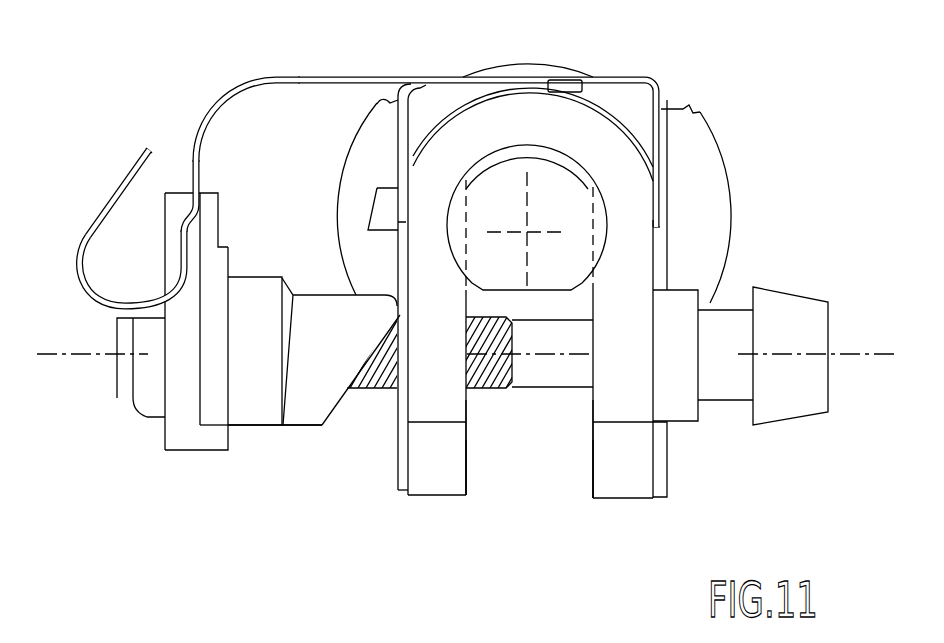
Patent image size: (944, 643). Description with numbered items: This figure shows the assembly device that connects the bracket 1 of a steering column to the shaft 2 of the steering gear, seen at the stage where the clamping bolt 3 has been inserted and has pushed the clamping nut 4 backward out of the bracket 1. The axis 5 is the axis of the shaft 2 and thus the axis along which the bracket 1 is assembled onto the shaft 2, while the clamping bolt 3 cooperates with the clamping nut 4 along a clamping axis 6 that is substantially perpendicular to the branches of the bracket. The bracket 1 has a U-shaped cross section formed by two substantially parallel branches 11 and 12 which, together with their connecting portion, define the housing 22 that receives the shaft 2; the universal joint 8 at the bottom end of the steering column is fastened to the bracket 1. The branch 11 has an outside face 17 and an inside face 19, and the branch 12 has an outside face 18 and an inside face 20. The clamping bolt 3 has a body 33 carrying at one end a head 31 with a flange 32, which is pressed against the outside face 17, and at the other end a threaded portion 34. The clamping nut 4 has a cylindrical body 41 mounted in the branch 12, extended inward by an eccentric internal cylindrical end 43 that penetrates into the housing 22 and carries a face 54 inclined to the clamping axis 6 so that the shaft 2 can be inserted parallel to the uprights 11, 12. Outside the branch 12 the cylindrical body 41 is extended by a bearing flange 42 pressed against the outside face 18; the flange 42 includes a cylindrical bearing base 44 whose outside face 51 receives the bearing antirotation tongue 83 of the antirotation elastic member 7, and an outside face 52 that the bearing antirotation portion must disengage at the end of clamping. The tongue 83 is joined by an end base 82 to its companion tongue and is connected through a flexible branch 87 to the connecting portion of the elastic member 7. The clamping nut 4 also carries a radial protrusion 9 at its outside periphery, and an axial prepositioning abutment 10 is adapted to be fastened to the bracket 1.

The bracket 1 is at (500, 128).
The shaft 2 is at (578, 206).
The clamping bolt 3 is at (737, 306).
The clamping nut 4 is at (268, 430).
The axis 5 is at (530, 230).
The clamping axis 6 is at (67, 360).
The antirotation elastic member 7 is at (371, 75).
The universal joint 8 is at (700, 117).
The radial protrusion 9 is at (213, 217).
The axial prepositioning abutment 10 is at (383, 210).
The branch 11 is at (617, 482).
The branch 12 is at (433, 472).
The outside face 17 is at (660, 482).
The outside face 18 is at (407, 463).
The inside face 19 is at (593, 472).
The inside face 20 is at (472, 472).
The housing 22 is at (527, 458).
The head 31 is at (800, 312).
The flange 32 is at (678, 397).
The body 33 is at (558, 373).
The threaded portion 34 is at (482, 393).
The cylindrical body 41 is at (253, 307).
The bearing flange 42 is at (213, 437).
The internal cylindrical end 43 is at (322, 327).
The cylindrical bearing base 44 is at (175, 422).
The outside face 51 is at (198, 388).
The outside face 52 is at (158, 222).
The inclined face 54 is at (350, 407).
The end base 82 is at (97, 217).
The bearing antirotation tongue 83 is at (122, 310).
The flexible branch 87 is at (243, 110).